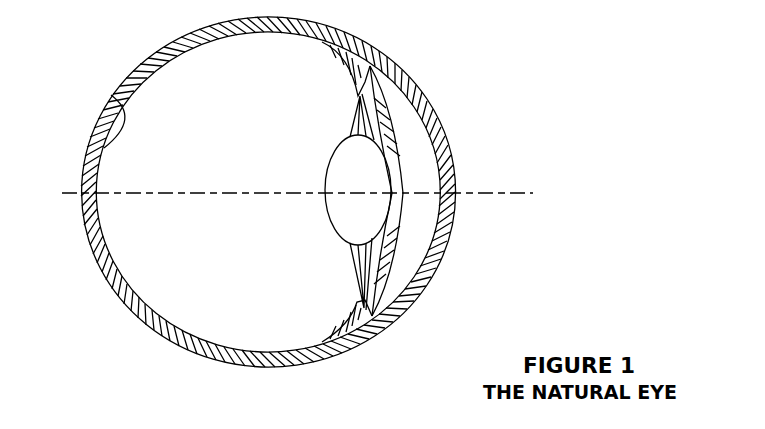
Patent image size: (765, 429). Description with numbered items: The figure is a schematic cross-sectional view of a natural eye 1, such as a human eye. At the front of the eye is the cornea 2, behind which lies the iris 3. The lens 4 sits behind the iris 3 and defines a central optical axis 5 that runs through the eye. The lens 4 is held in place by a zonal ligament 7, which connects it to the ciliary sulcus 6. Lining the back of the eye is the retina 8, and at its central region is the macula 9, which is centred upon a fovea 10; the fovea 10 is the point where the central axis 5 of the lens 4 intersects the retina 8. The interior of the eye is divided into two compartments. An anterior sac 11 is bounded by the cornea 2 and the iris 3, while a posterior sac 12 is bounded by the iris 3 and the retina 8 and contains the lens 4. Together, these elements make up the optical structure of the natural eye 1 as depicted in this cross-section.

The natural eye 1 is at (177, 347).
The cornea 2 is at (440, 240).
The iris 3 is at (392, 130).
The lens 4 is at (337, 177).
The central optical axis 5 is at (533, 193).
The ciliary sulcus 6 is at (353, 90).
The zonal ligament 7 is at (357, 123).
The retina 8 is at (121, 102).
The macula 9 is at (98, 220).
The fovea 10 is at (98, 195).
The anterior sac 11 is at (420, 172).
The posterior sac 12 is at (200, 124).